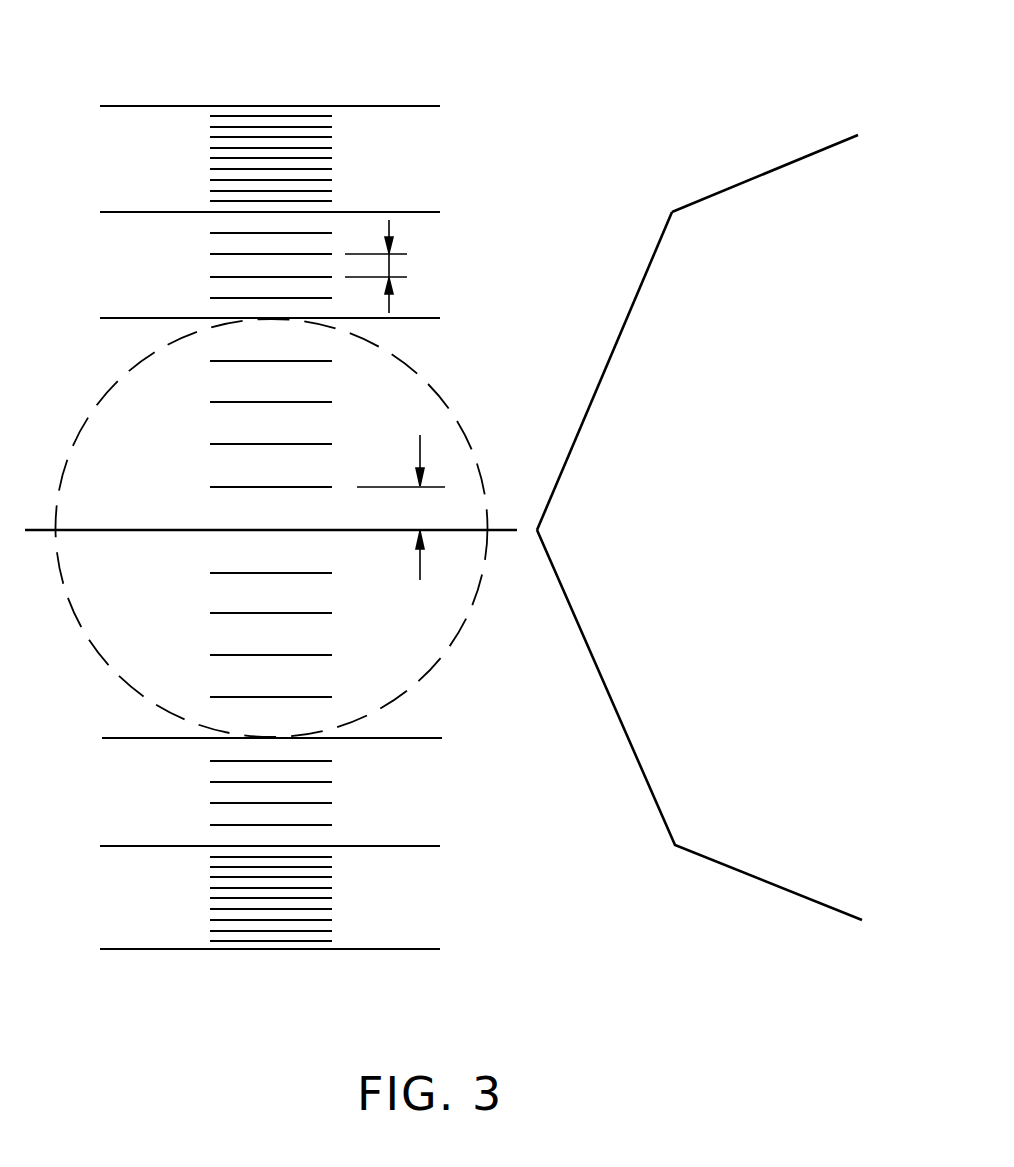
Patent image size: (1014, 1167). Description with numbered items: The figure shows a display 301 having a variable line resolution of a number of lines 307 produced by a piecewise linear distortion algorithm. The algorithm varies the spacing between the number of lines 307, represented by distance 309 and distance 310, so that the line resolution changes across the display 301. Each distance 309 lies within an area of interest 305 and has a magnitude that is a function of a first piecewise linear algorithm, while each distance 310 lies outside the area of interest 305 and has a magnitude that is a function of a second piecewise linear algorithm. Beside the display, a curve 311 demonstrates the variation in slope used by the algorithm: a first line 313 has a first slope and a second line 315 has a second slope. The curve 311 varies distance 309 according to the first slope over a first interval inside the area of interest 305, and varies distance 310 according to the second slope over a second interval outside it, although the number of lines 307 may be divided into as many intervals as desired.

The display 301 is at (192, 57).
The area of interest 305 is at (445, 655).
The number of lines 307 is at (216, 181).
The distance 309 is at (420, 445).
The distance 310 is at (393, 258).
The curve 311 is at (748, 119).
The first line 313 is at (607, 362).
The second line 315 is at (725, 190).